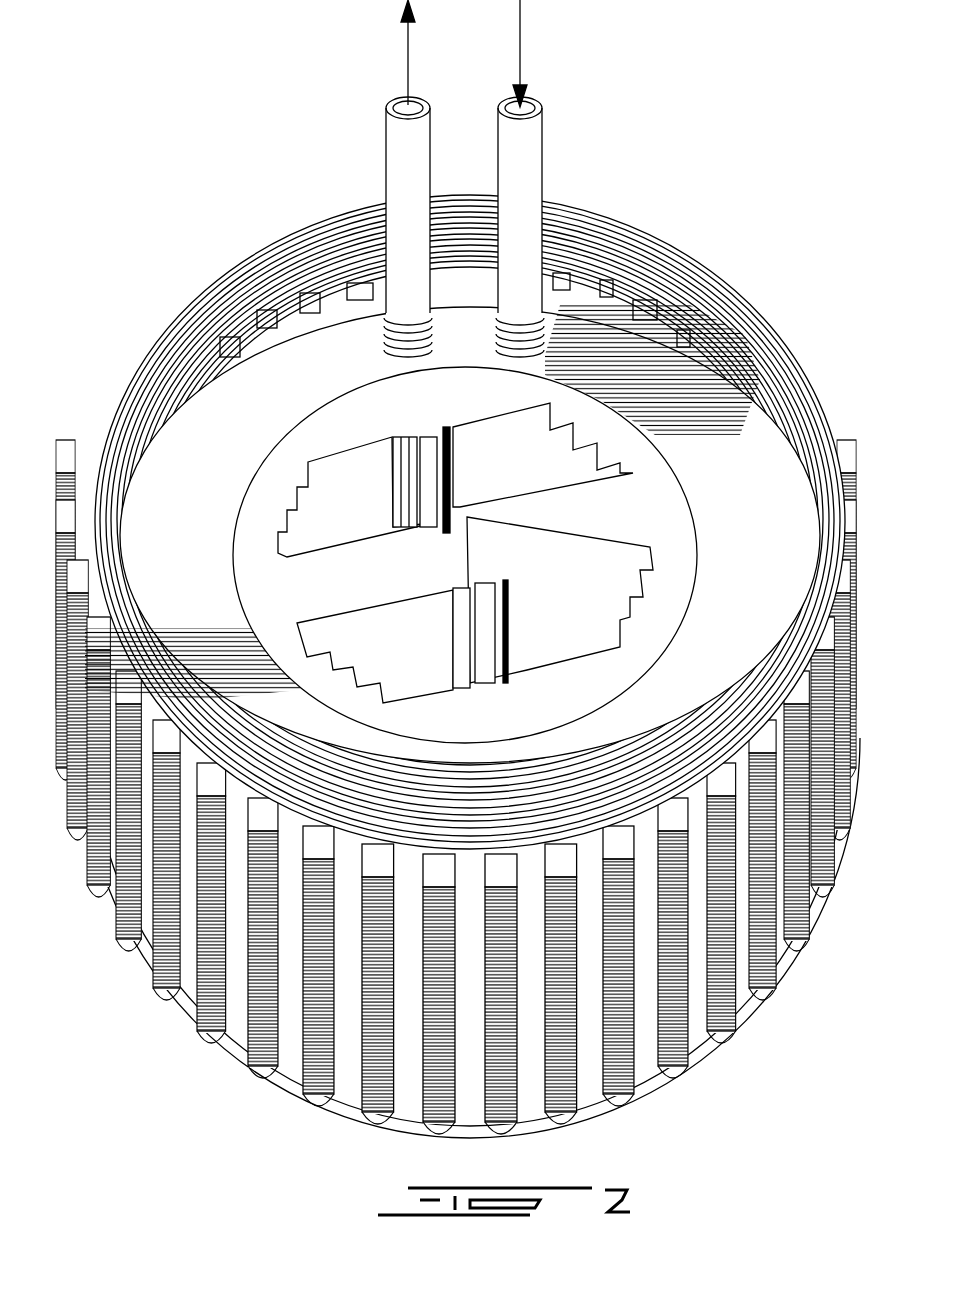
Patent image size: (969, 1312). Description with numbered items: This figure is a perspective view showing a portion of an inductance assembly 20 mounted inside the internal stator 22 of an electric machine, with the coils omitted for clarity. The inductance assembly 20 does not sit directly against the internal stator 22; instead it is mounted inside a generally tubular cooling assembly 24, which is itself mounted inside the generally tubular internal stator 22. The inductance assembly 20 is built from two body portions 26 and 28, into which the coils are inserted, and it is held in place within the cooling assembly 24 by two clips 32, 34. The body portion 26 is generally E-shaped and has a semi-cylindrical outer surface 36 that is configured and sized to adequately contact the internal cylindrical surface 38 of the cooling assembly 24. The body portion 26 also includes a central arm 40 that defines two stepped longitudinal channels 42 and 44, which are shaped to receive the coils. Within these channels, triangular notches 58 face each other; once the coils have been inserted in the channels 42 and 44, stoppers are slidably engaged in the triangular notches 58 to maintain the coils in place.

The inductance assembly 20 is at (476, 436).
The internal stator 22 is at (482, 480).
The cooling assembly 24 is at (462, 488).
The body portion 26 is at (255, 388).
The body portion 28 is at (627, 490).
The clip 32 is at (348, 420).
The clip 34 is at (455, 789).
The semi-cylindrical outer surface 36 is at (240, 588).
The internal cylindrical surface 38 is at (203, 717).
The central arm 40 is at (317, 710).
The stepped longitudinal channel 42 is at (360, 510).
The stepped longitudinal channel 44 is at (465, 640).
The triangular notches 58 is at (470, 620).